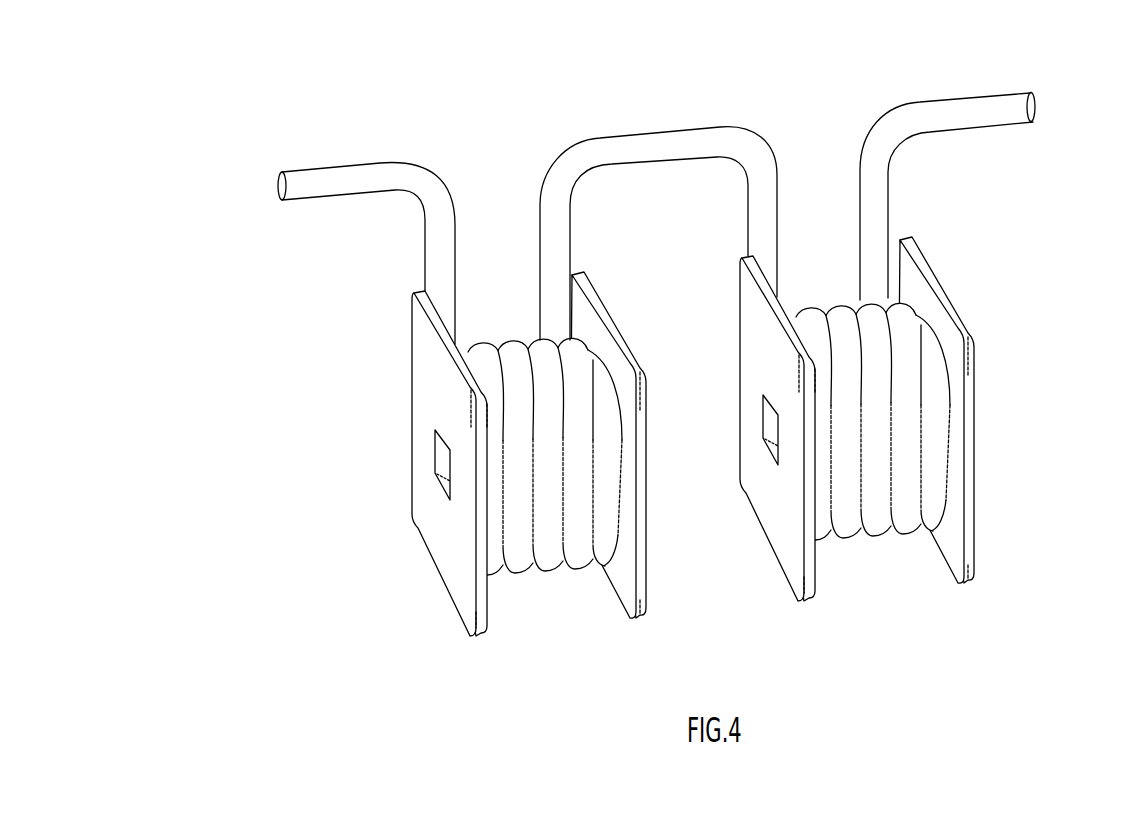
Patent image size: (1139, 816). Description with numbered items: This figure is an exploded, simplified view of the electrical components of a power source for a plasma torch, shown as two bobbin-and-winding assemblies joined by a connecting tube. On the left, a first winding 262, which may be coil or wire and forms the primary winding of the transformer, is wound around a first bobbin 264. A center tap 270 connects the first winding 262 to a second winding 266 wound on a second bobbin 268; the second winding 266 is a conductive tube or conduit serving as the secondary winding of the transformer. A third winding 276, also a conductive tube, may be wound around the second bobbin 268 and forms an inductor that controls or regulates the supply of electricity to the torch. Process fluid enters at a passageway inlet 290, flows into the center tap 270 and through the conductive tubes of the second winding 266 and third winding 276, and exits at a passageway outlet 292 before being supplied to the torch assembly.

The first winding 262 is at (546, 572).
The first bobbin 264 is at (443, 568).
The second winding 266 is at (918, 452).
The second bobbin 268 is at (955, 310).
The center tap 270 is at (667, 132).
The third winding 276 is at (942, 478).
The passageway inlet 290 is at (270, 187).
The passageway outlet 292 is at (1122, 98).